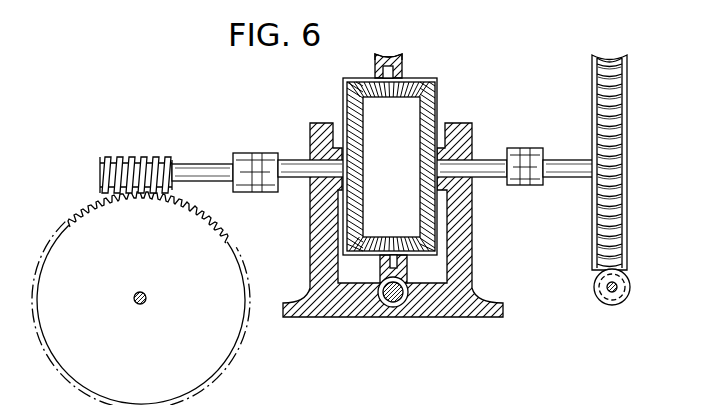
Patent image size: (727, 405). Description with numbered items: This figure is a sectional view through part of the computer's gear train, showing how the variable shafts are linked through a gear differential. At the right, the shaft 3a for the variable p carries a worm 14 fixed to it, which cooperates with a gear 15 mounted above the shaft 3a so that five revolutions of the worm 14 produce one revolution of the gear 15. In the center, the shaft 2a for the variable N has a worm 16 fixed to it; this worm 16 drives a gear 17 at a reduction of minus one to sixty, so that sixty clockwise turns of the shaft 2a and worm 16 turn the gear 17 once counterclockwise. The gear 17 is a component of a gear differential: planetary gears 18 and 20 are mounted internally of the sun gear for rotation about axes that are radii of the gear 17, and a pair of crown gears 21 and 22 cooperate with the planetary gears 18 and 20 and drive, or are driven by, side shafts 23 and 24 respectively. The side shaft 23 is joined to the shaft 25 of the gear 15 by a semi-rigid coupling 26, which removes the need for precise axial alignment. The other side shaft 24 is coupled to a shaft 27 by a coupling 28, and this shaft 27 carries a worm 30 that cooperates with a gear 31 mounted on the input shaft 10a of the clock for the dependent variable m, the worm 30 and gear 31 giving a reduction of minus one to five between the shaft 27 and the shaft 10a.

The shaft 2a is at (396, 304).
The shaft 3a is at (616, 284).
The input shaft 10a is at (146, 293).
The worm 14 is at (630, 292).
The gear 15 is at (621, 147).
The worm 16 is at (400, 286).
The gear 17 is at (398, 53).
The planetary gear 18 is at (404, 68).
The planetary gear 20 is at (378, 256).
The crown gear 21 is at (437, 102).
The crown gear 22 is at (343, 102).
The side shaft 23 is at (481, 158).
The side shaft 24 is at (290, 160).
The shaft 25 is at (560, 177).
The semi-rigid coupling 26 is at (527, 148).
The shaft 27 is at (202, 166).
The coupling 28 is at (248, 155).
The worm 30 is at (142, 158).
The gear 31 is at (212, 378).